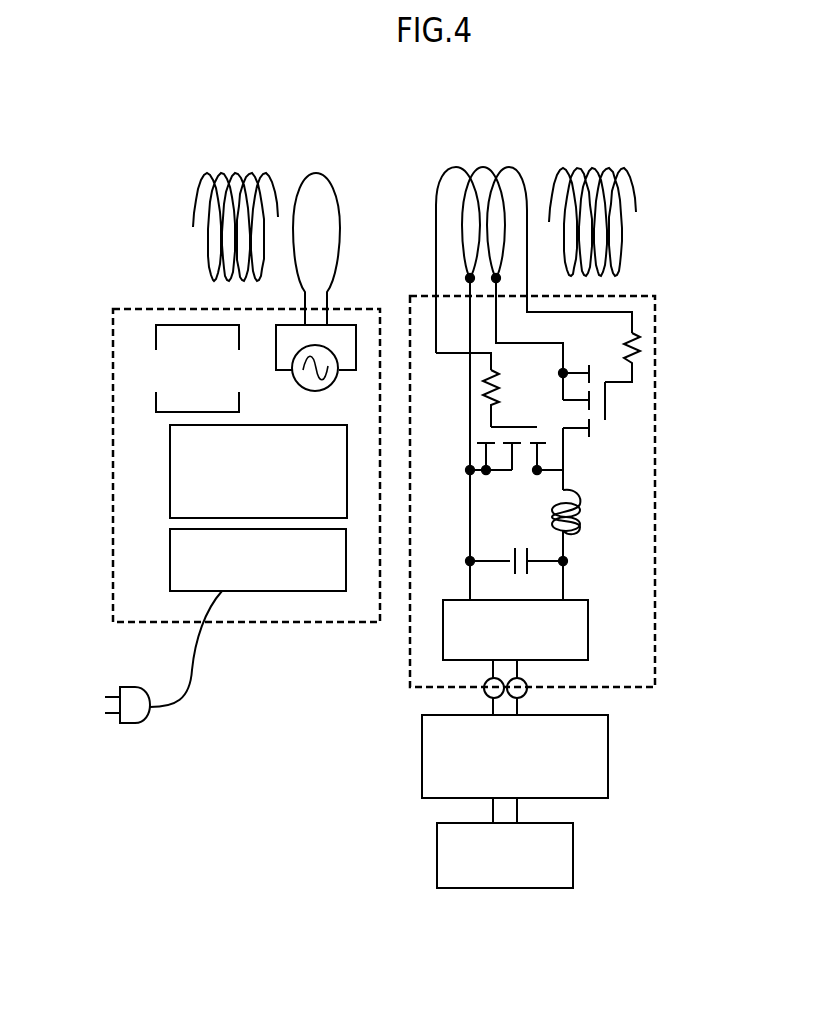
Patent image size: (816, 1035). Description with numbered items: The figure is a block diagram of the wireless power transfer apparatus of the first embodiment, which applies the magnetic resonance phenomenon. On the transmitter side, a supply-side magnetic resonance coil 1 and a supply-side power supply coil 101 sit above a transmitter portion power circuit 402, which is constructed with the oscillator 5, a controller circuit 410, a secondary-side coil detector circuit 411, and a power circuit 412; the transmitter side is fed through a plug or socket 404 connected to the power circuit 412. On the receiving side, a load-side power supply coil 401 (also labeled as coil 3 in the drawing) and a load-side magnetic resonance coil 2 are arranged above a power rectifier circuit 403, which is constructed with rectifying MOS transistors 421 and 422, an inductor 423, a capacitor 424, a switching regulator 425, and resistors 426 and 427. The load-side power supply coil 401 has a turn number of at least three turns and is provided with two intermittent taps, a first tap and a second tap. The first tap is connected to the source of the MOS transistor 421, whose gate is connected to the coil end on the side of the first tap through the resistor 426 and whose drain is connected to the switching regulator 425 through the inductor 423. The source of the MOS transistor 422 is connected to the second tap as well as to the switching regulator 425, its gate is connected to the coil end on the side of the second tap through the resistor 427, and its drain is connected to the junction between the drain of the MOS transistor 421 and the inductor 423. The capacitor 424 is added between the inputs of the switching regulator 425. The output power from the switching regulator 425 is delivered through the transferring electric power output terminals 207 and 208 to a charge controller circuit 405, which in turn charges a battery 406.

The supply-side magnetic resonance coil 1 is at (236, 173).
The supply-side power supply coil 101 is at (313, 175).
The transmitter portion power circuit 402 is at (140, 309).
The oscillator 5 is at (330, 387).
The controller circuit 410 is at (157, 406).
The secondary-side coil detector circuit 411 is at (167, 468).
The power circuit 412 is at (168, 557).
The plug or socket 404 is at (150, 718).
The load-side power supply coil 401 is at (534, 232).
The secondary coil 3 is at (507, 168).
The load-side magnetic resonance coil 2 is at (588, 167).
The power rectifier circuit 403 is at (635, 297).
The resistor 426 is at (647, 343).
The resistor 427 is at (483, 390).
The rectifying MOS transistor 422 is at (513, 425).
The rectifying MOS transistor 421 is at (605, 407).
The inductor 423 is at (580, 513).
The capacitor 424 is at (510, 550).
The switching regulator 425 is at (588, 620).
The transferring electric power output terminal 208 is at (483, 690).
The transferring electric power output terminal 207 is at (527, 690).
The charge controller circuit 405 is at (608, 770).
The battery 406 is at (573, 855).